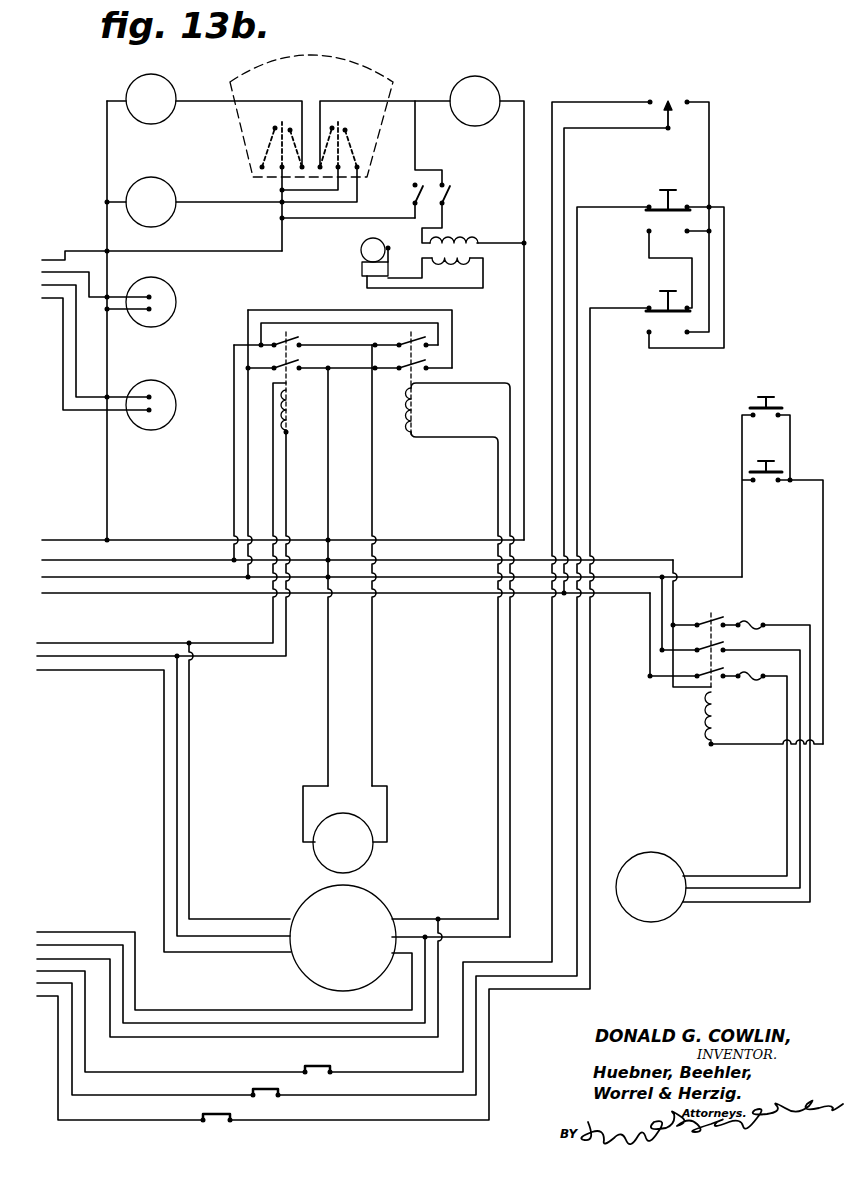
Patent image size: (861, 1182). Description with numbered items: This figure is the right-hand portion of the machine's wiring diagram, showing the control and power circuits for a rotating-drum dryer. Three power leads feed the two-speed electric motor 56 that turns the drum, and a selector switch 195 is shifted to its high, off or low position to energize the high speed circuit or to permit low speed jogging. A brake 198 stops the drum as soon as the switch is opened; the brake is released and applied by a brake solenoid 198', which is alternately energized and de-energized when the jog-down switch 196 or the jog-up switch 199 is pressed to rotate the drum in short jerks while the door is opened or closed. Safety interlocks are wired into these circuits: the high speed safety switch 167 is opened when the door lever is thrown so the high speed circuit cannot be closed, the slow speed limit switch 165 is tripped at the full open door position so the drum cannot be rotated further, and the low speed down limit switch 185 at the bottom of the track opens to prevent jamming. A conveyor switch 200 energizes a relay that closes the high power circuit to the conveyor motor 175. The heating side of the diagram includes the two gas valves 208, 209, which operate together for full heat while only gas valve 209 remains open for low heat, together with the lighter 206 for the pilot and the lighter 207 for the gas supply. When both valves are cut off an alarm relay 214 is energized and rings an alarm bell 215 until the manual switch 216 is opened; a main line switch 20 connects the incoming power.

The gas valve 208 is at (134, 81).
The gas valve 209 is at (133, 185).
The lighter 207 is at (169, 285).
The lighter 206 is at (162, 428).
The alarm relay 214 is at (475, 76).
The manual switch 216 is at (452, 202).
The signal bell 215 is at (362, 271).
The selector switch 195 is at (668, 100).
The jog-up switch 199 is at (654, 200).
The jog-down switch 196 is at (709, 310).
The conveyor switch 200 is at (740, 440).
The brake solenoid 198' is at (412, 403).
The brake 198 is at (369, 843).
The electric motor 56 is at (382, 902).
The conveyor motor 175 is at (657, 853).
The main switch 20 is at (702, 718).
The high speed safety switch 167 is at (321, 1068).
The slow speed limit switch 165 is at (270, 1099).
The limit switch 185 is at (208, 1127).